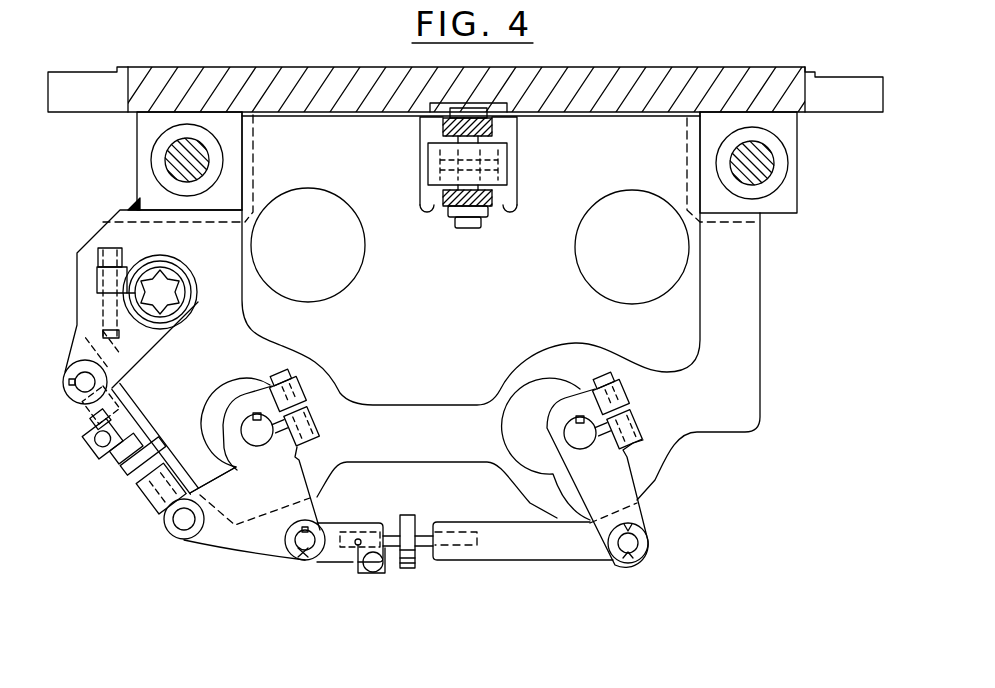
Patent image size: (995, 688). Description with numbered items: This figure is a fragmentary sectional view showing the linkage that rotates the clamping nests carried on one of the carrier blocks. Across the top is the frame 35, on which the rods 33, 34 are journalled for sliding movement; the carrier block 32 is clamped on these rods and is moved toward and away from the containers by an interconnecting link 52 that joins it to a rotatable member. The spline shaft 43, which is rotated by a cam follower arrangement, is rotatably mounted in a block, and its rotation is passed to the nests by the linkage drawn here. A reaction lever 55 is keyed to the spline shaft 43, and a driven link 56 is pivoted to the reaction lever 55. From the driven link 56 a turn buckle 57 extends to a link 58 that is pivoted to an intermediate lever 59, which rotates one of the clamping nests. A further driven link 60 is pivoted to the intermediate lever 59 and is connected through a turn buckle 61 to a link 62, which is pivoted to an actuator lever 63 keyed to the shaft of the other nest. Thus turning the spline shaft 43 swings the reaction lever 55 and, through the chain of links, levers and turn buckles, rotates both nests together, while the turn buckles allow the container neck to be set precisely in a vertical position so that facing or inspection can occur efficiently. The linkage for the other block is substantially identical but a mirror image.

The carrier block 32 is at (752, 328).
The rod 33 is at (172, 160).
The rod 34 is at (757, 165).
The frame 35 is at (662, 80).
The spline shaft 43 is at (170, 293).
The interconnecting link 52 is at (443, 128).
The reaction lever 55 is at (147, 347).
The driven link 56 is at (86, 420).
The turn buckle 57 is at (117, 486).
The link 58 is at (153, 517).
The intermediate lever 59 is at (262, 542).
The driven link 60 is at (345, 563).
The turn buckle 61 is at (412, 582).
The link 62 is at (552, 550).
The actuator lever 63 is at (577, 437).